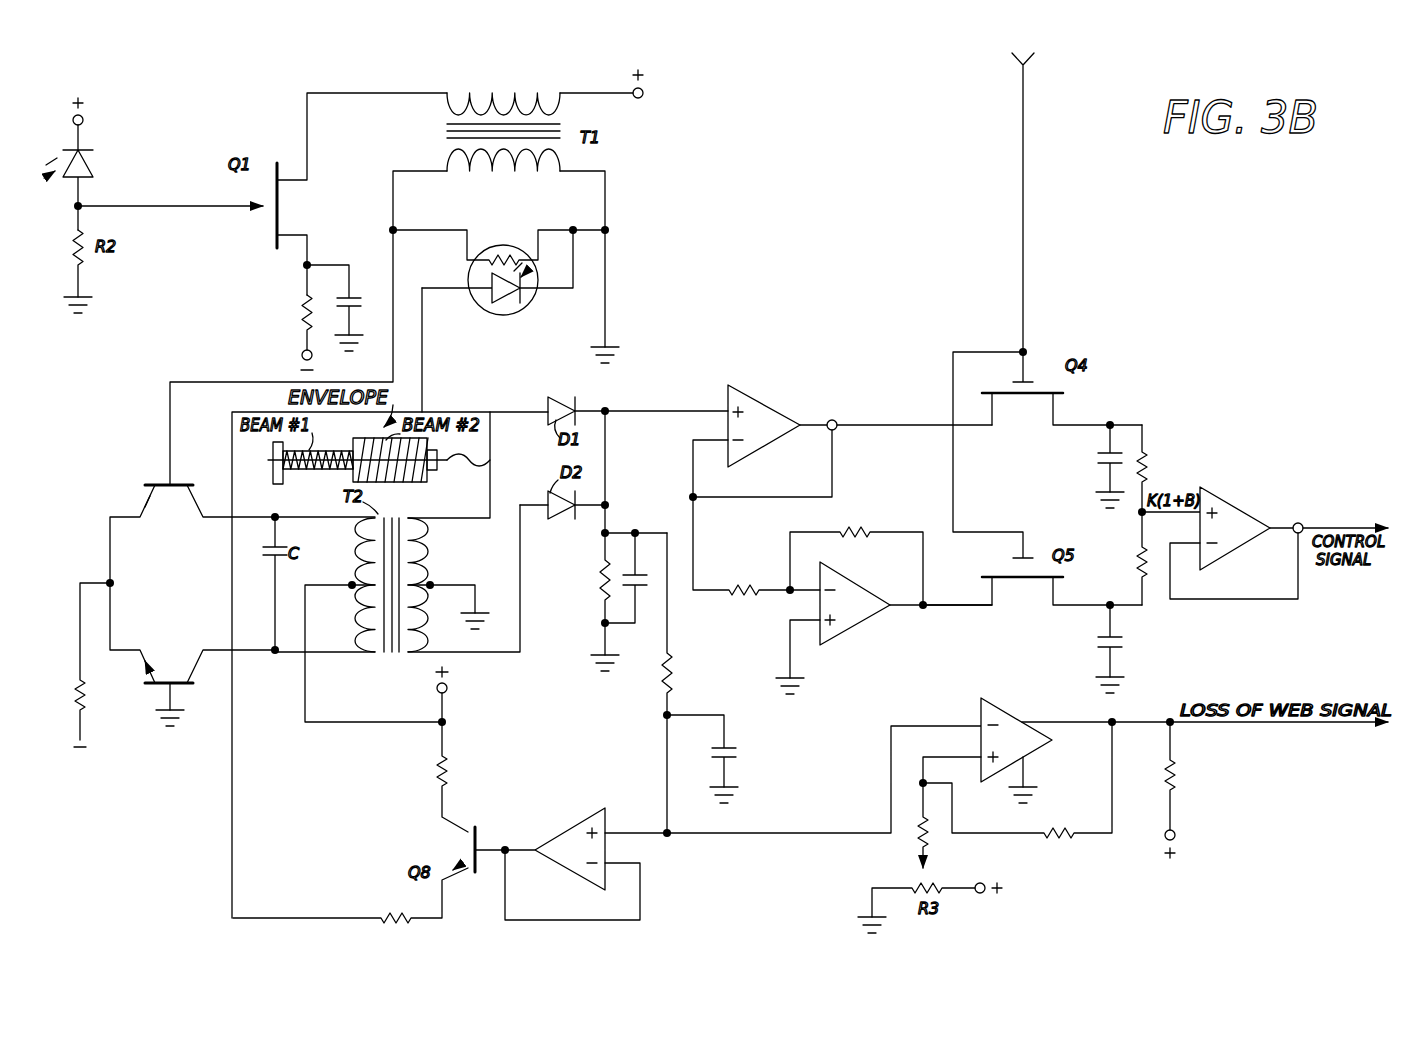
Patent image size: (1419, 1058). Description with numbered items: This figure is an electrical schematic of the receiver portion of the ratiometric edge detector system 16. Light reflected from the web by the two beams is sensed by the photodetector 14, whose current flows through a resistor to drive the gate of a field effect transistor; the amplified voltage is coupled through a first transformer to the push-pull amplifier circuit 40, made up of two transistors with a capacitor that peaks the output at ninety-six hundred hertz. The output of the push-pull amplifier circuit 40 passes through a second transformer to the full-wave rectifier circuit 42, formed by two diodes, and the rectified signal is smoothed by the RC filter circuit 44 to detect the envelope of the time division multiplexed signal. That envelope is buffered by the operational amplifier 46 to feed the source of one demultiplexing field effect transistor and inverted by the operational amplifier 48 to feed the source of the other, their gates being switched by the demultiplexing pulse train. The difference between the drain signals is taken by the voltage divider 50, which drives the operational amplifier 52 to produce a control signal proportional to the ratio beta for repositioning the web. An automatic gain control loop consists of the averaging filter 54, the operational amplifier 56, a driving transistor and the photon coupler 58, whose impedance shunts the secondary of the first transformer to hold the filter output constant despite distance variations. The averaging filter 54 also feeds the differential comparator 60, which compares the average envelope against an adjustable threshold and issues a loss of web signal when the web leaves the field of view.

The photodetector 14 is at (92, 165).
The receiver circuit / antenna 16 is at (1135, 256).
The push-pull amplifier circuit 40 is at (99, 526).
The full-wave rectifier circuit 42 is at (531, 396).
The RC filter circuit 44 is at (625, 516).
The operational amplifier 46 is at (772, 393).
The operational amplifier 48 is at (852, 641).
The voltage divider 50 is at (1157, 464).
The operational amplifier 52 is at (1245, 501).
The averaging filter 54 is at (702, 698).
The operational amplifier 56 is at (559, 813).
The photon coupler 58 is at (527, 307).
The differential comparator 60 is at (1030, 705).